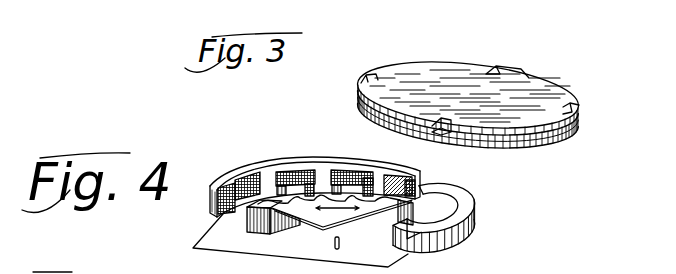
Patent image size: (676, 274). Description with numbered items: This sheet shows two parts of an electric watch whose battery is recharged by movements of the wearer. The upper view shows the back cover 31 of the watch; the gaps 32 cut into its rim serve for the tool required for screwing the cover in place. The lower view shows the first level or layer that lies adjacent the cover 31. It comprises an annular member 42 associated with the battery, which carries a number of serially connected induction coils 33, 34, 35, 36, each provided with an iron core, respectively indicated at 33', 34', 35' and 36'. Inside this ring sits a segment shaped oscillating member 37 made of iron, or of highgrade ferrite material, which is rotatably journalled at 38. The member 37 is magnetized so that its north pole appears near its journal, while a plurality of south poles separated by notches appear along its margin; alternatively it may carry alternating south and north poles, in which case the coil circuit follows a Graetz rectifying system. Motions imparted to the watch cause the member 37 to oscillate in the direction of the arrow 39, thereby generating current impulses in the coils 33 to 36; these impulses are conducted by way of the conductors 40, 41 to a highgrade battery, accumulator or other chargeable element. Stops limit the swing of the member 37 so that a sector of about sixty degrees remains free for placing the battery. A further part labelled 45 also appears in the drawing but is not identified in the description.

In FIG. 3, the back cover 31 is at (526, 76).
In FIG. 3, the gaps 32 is at (366, 78).
In FIG. 4, the induction coil 33 is at (214, 180).
In FIG. 4, the iron core 33' is at (242, 163).
In FIG. 4, the induction coil 34 is at (291, 163).
In FIG. 4, the iron core 34' is at (308, 161).
In FIG. 4, the induction coil 35 is at (352, 162).
In FIG. 4, the iron core 35' is at (374, 166).
In FIG. 4, the induction coil 36 is at (405, 169).
In FIG. 4, the iron core 36' is at (434, 175).
In FIG. 4, the segment shaped oscillating member 37 is at (299, 214).
In FIG. 4, the journal 38 is at (342, 243).
In FIG. 4, the arrow 39 is at (322, 217).
In FIG. 4, the conductor 40 is at (210, 232).
In FIG. 4, the conductor 41 is at (213, 218).
In FIG. 4, the annular member 42 is at (470, 214).
In FIG. 4, the support 45 is at (134, 268).